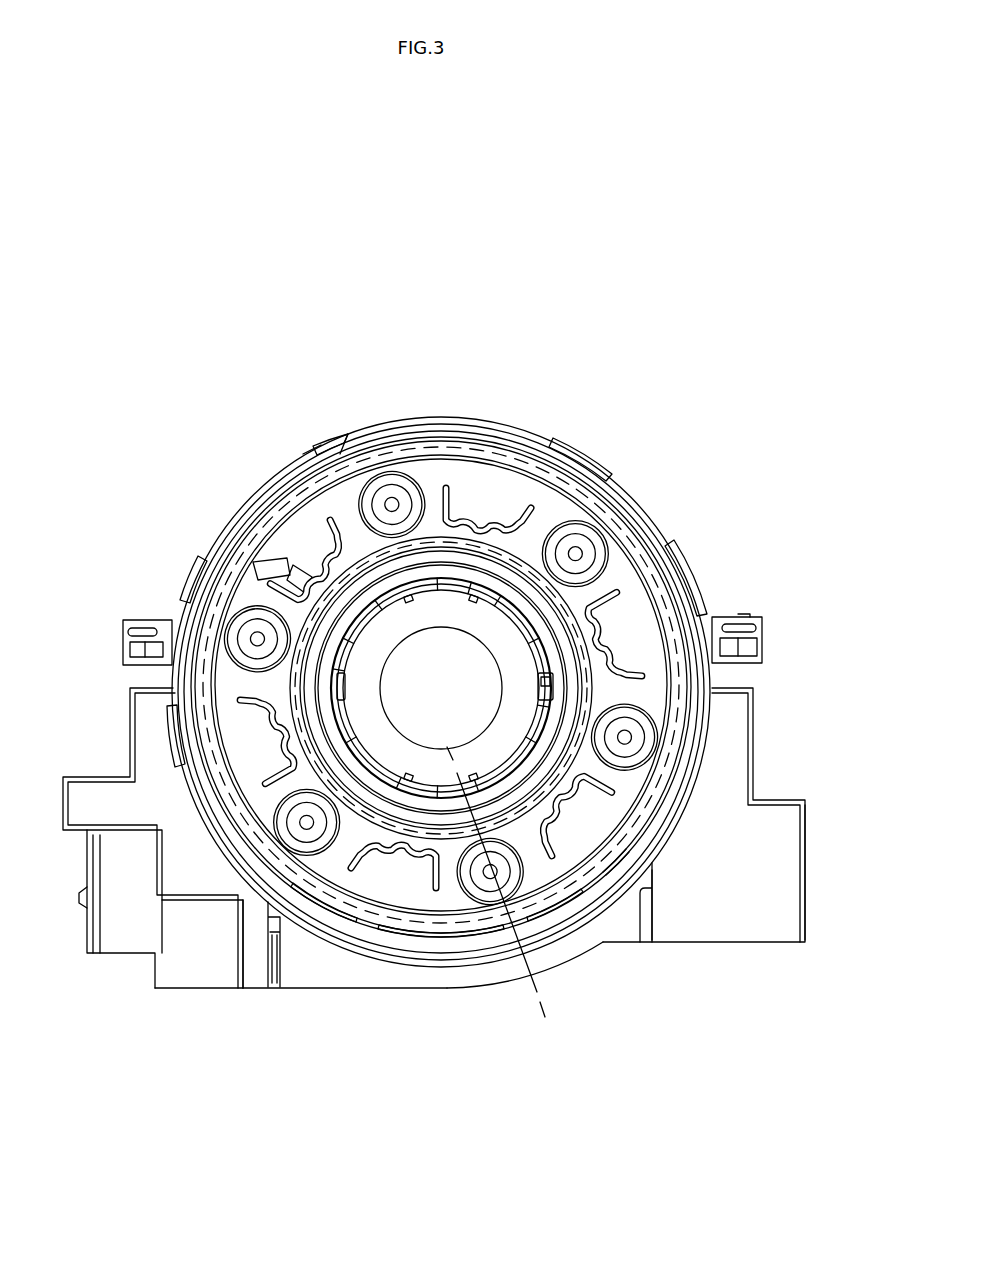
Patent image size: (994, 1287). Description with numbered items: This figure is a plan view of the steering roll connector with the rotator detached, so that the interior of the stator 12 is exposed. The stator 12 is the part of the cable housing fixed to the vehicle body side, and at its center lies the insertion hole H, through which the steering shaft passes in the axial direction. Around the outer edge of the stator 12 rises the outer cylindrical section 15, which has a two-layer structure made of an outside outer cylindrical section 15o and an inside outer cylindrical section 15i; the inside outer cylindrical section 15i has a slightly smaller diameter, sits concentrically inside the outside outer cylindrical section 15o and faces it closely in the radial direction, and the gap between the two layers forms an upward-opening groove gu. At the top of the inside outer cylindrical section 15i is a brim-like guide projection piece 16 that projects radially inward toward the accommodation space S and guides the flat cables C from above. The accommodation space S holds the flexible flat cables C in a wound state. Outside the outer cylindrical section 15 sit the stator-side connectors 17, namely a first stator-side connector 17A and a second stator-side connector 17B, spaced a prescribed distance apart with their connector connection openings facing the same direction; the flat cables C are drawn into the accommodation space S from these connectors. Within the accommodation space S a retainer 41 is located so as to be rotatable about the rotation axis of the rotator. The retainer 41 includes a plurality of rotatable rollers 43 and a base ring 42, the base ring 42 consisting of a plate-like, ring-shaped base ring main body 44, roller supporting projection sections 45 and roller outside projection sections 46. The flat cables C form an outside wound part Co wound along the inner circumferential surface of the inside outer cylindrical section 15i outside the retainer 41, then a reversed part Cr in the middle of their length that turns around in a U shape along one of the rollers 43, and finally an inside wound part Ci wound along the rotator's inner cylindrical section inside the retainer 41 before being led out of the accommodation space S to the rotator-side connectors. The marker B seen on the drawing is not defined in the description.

The stator 12 is at (228, 503).
The guide projection piece 16 is at (628, 542).
The retainer 41 is at (547, 292).
The base ring 42 is at (373, 343).
The rotatable rollers 43 is at (553, 517).
The base ring main body 44 is at (347, 483).
The roller supporting projection sections 45 is at (397, 497).
The roller outside projection sections 46 is at (468, 517).
The outer cylindrical section 15 is at (82, 695).
The outside outer cylindrical section 15o is at (176, 710).
The inside outer cylindrical section 15i is at (183, 756).
The stator-side connectors 17 is at (483, 896).
The first stator-side connector 17A is at (208, 989).
The second stator-side connector 17B is at (707, 943).
The flexible flat cables C is at (100, 492).
The inside wound part Ci is at (318, 562).
The reversed part Cr is at (243, 612).
The outside wound part Co is at (210, 660).
The accommodation space S is at (623, 647).
The insertion hole H is at (434, 694).
The section line B- B is at (489, 894).
The groove gu is at (788, 750).